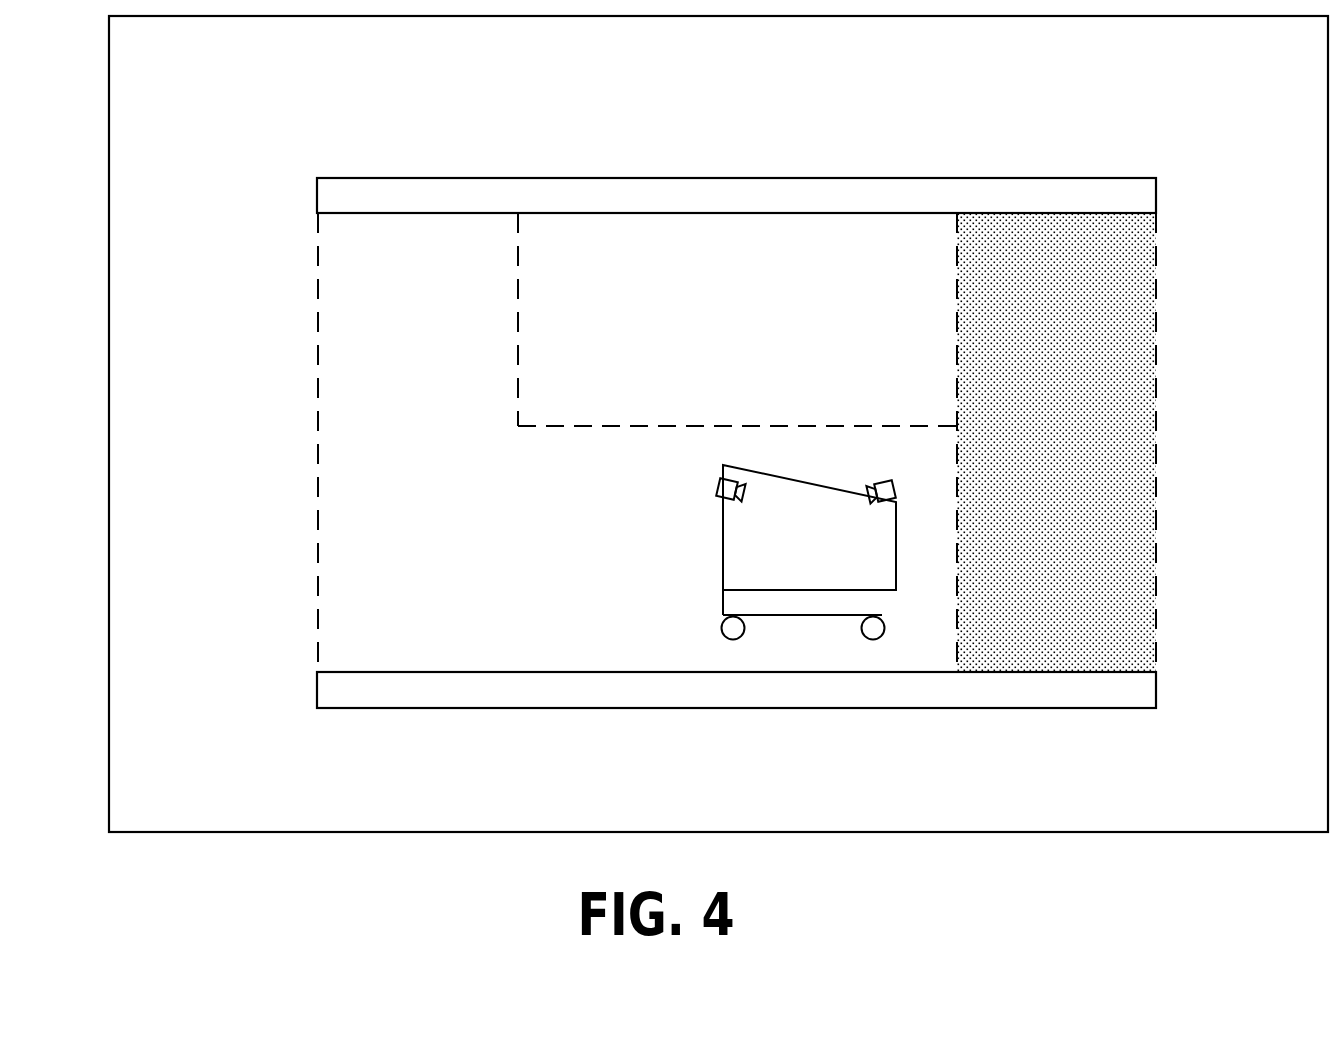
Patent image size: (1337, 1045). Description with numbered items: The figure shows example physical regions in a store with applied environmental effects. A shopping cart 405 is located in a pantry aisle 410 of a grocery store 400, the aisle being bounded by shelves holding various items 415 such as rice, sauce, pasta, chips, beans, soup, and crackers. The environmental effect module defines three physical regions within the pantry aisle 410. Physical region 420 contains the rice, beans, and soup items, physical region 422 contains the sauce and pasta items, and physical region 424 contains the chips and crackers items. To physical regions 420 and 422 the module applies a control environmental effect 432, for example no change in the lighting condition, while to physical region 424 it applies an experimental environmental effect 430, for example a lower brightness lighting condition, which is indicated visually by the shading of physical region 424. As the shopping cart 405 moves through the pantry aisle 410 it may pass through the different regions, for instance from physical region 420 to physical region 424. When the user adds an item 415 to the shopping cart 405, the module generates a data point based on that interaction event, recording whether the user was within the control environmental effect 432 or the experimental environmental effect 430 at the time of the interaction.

The grocery store 400 is at (1035, 832).
The shopping cart 405 is at (806, 552).
The pantry aisle 410 is at (300, 434).
The items 415 is at (1098, 198).
The physical region 420 is at (637, 442).
The physical region 422 is at (737, 319).
The physical region 424 is at (1056, 442).
The experimental environmental effect 430 is at (1130, 327).
The control environmental effect 432 is at (533, 302).